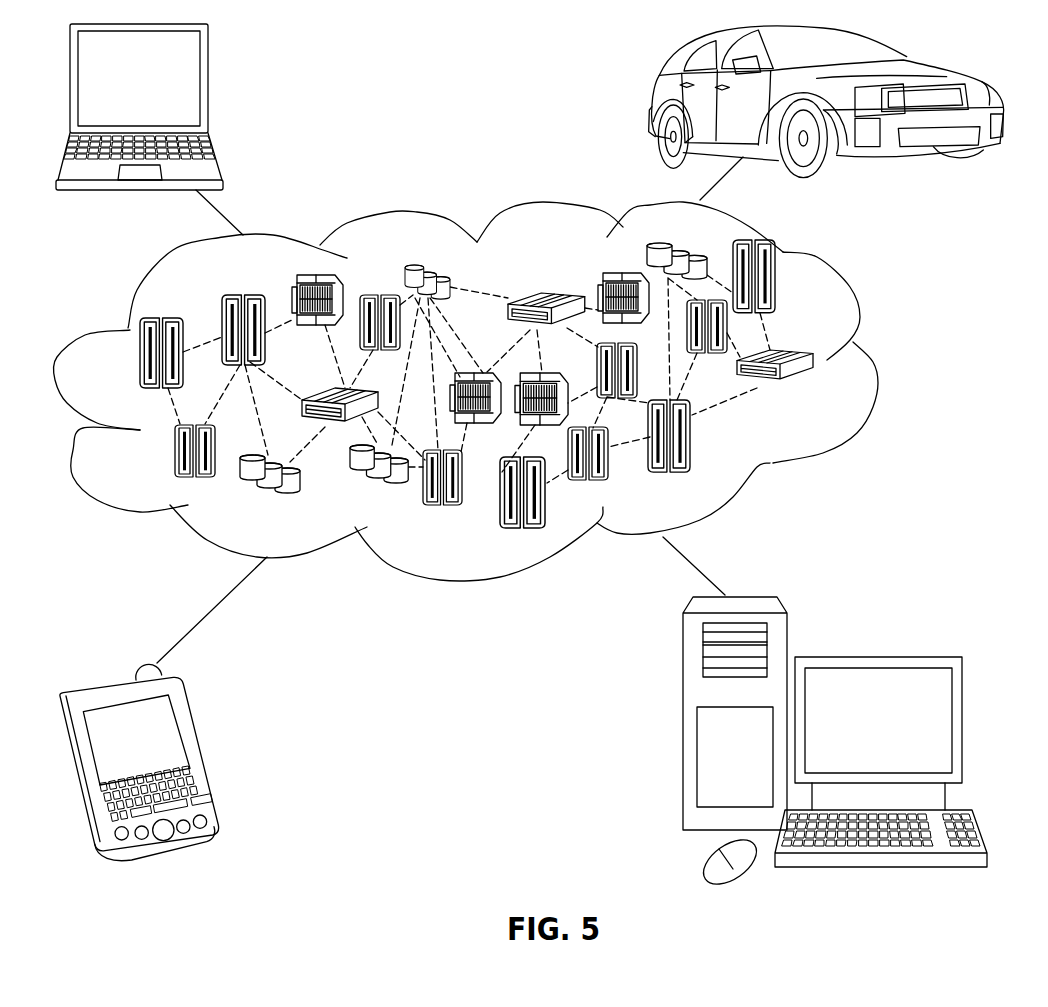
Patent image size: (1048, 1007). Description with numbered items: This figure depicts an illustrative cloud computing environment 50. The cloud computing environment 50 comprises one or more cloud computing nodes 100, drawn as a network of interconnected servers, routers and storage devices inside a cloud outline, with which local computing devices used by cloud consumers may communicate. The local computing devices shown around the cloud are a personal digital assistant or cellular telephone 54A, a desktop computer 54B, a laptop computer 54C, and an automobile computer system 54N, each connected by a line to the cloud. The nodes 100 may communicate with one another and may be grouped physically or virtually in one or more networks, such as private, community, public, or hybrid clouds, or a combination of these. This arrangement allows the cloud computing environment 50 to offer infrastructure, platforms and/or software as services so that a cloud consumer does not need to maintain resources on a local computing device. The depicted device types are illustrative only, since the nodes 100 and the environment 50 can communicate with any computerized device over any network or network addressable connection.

The cloud computing environment 50 is at (877, 362).
The cloud computing nodes 100 is at (817, 395).
The personal digital assistant or cellular telephone 54A is at (202, 748).
The desktop computer 54B is at (873, 657).
The laptop computer 54C is at (212, 88).
The automobile computer system 54N is at (653, 103).